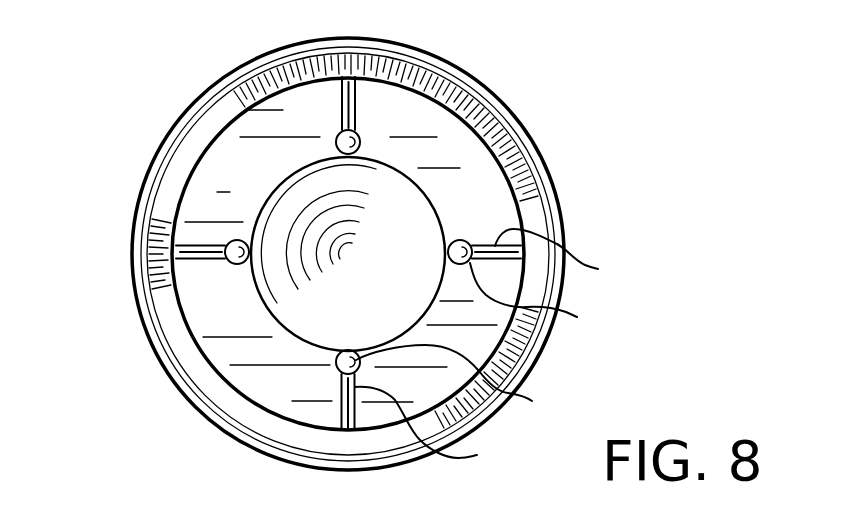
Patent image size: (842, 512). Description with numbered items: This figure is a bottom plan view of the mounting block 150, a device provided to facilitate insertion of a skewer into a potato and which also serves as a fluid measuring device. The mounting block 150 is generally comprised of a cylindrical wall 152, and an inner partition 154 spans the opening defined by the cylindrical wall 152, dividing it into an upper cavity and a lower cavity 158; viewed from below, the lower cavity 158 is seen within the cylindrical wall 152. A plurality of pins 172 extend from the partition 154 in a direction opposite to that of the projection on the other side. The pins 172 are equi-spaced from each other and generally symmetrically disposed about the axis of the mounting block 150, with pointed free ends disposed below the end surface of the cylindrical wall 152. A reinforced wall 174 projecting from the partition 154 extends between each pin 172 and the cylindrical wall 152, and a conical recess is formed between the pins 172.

The mounting block 150 is at (122, 294).
The cylindrical wall 152 is at (527, 148).
The inner partition 154 is at (468, 153).
The lower cavity 158 is at (228, 177).
The pins 172 is at (489, 339).
The reinforced wall 174 is at (500, 350).